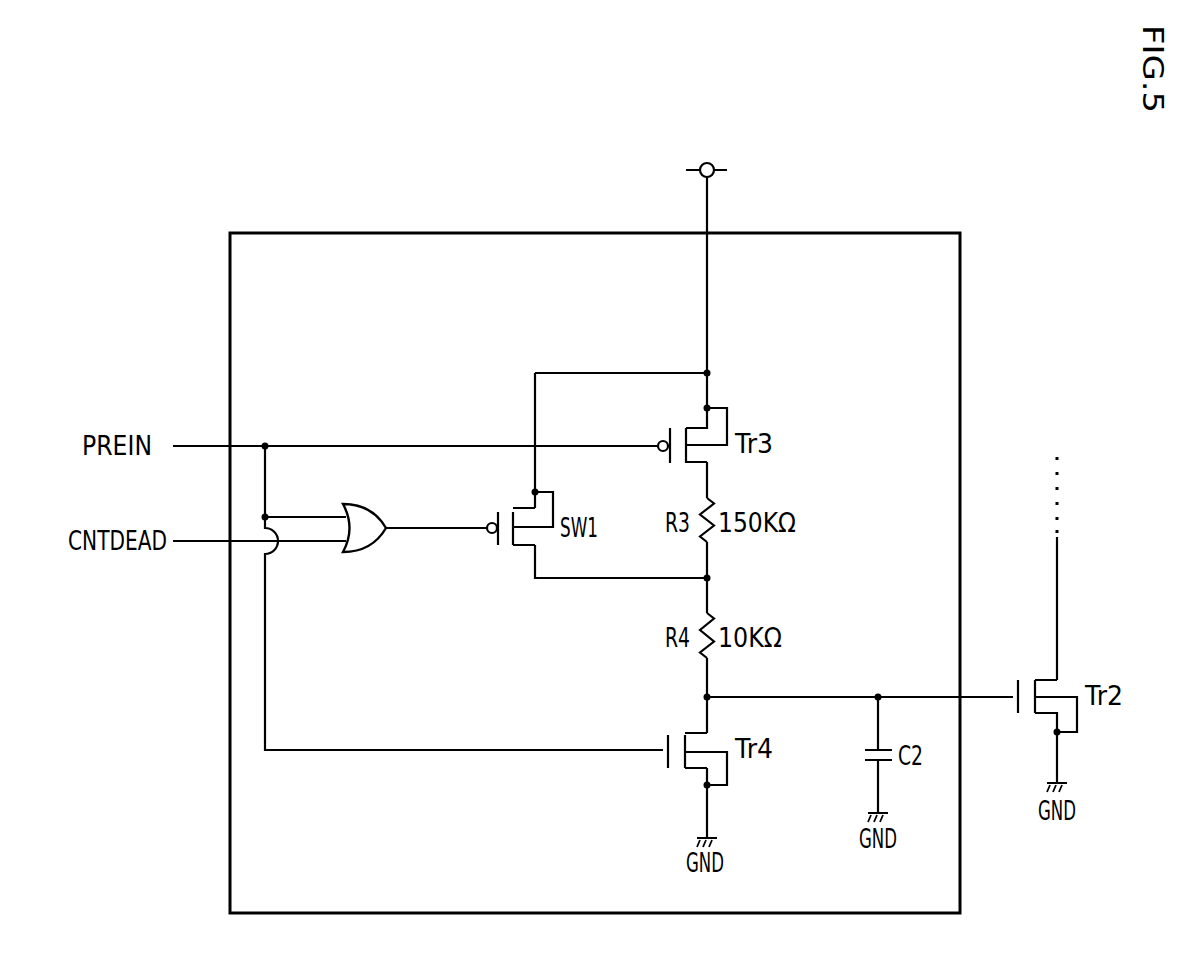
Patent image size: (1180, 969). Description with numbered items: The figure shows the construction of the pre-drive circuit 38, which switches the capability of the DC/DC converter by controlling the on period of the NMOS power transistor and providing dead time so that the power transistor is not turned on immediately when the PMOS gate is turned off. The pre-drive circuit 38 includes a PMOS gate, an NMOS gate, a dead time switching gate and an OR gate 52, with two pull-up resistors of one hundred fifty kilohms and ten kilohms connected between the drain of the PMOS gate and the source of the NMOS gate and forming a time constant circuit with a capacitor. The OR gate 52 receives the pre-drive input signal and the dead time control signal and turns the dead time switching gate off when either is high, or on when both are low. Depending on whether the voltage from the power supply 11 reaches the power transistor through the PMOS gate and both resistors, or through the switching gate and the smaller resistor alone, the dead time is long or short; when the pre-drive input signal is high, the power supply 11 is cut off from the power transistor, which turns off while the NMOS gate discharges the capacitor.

The power supply 11 is at (712, 162).
The pre-drive circuit 38 is at (596, 232).
The OR gate 52 is at (370, 549).